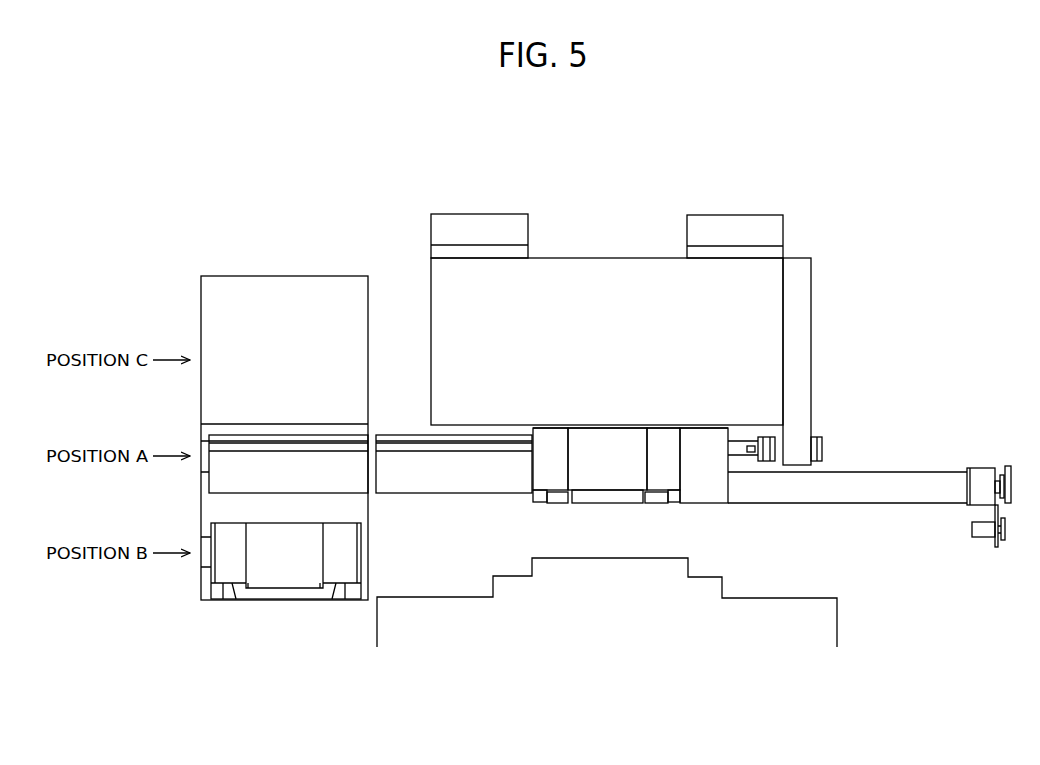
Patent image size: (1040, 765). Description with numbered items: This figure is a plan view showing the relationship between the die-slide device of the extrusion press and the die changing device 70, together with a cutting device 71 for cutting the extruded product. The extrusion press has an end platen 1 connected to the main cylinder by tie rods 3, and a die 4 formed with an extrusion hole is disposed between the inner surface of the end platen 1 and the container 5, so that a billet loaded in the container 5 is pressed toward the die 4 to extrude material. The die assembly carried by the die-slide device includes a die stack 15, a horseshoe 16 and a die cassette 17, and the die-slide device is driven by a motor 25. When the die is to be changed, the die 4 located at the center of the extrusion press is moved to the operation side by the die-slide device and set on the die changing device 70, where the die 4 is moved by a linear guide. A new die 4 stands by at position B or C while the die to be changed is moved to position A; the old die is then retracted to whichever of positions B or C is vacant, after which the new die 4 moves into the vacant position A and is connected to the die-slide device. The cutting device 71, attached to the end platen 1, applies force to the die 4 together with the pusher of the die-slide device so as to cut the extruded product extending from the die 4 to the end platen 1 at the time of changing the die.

The end platen 1 is at (607, 297).
The tie rod 3 is at (469, 232).
The die 4 is at (626, 582).
The container 5 is at (743, 616).
The die stack 15 is at (607, 470).
The horseshoe 16 is at (633, 499).
The die cassette 17 is at (552, 472).
The motor 25 is at (986, 527).
The die changing device 70 is at (267, 271).
The cutting device 71 is at (834, 444).